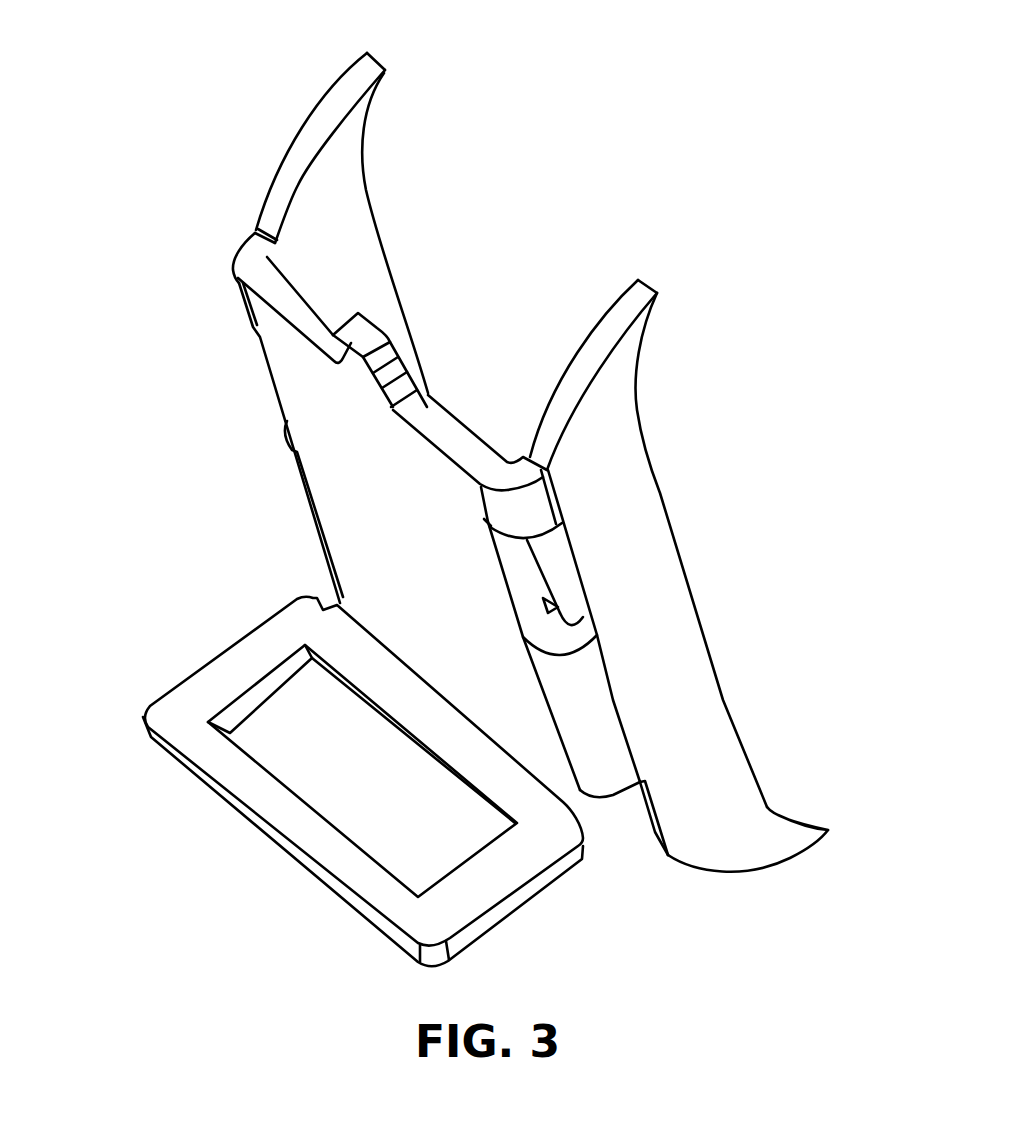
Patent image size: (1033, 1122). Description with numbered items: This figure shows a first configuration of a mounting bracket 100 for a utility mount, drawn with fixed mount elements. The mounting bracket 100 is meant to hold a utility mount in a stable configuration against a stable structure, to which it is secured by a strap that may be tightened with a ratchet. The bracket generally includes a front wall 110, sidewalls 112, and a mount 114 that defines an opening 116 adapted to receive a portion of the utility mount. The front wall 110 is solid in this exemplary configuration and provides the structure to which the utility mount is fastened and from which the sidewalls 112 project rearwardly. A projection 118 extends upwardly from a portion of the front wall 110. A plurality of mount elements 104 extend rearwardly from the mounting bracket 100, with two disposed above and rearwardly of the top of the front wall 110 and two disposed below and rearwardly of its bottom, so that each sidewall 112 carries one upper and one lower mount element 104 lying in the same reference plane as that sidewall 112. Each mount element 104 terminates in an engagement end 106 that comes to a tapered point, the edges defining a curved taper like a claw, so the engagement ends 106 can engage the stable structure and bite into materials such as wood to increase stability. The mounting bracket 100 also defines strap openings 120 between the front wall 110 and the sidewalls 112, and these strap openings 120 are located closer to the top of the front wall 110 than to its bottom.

The mounting bracket 100 is at (182, 284).
The mount element 104 is at (367, 102).
The engagement end 106 is at (372, 62).
The front wall 110 is at (330, 473).
The sidewall 112 is at (360, 250).
The mount 114 is at (207, 672).
The opening 116 is at (351, 795).
The projection 118 is at (363, 337).
The strap opening 120 is at (280, 400).